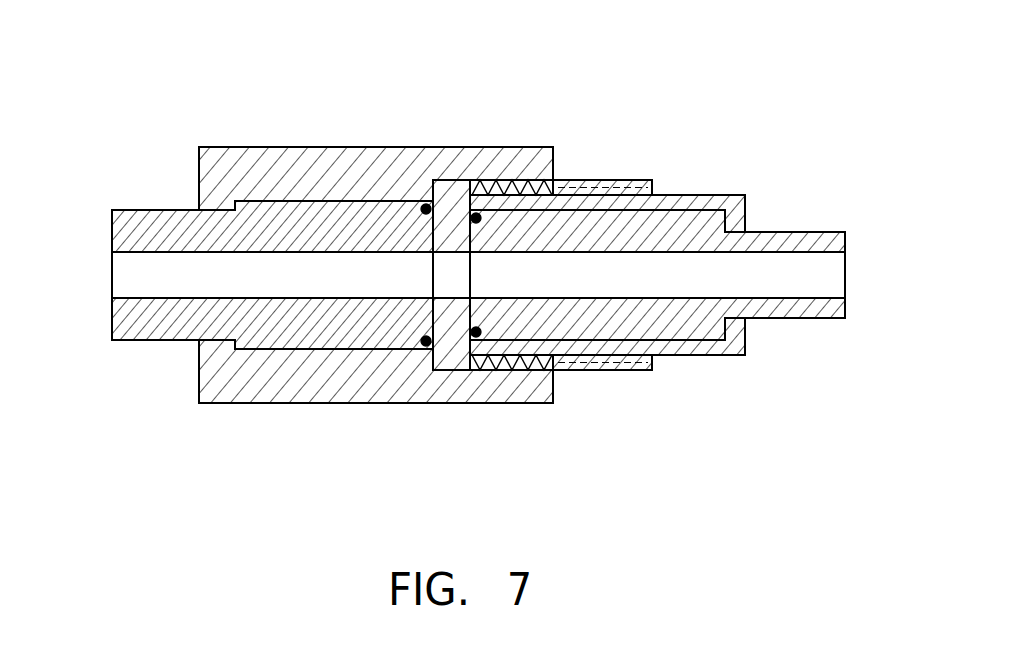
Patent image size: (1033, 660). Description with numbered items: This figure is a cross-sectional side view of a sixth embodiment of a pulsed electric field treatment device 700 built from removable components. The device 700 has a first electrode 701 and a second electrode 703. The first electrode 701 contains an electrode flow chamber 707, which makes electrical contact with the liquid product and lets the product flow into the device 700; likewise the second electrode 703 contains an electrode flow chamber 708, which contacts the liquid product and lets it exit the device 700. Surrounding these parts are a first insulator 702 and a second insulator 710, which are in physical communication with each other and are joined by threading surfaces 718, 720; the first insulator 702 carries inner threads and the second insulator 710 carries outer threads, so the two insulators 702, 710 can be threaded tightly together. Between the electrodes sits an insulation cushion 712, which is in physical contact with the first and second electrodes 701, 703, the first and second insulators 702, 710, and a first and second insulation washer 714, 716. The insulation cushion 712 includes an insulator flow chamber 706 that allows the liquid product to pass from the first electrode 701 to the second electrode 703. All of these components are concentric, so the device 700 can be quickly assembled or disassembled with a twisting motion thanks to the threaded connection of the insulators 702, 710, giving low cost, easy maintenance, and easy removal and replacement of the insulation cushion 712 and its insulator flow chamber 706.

The pulsed electric field treatment device 700 is at (130, 378).
The first electrode 701 is at (162, 237).
The first insulator 702 is at (299, 150).
The second electrode 703 is at (783, 240).
The insulator flow chamber 706 is at (450, 280).
The electrode flow chamber 707 is at (222, 300).
The electrode flow chamber 708 is at (667, 283).
The second insulator 710 is at (642, 179).
The insulation cushion 712 is at (452, 203).
The first insulation washer 714 is at (424, 204).
The second insulation washer 716 is at (502, 178).
The threading surface 718 is at (523, 377).
The threading surface 720 is at (556, 180).